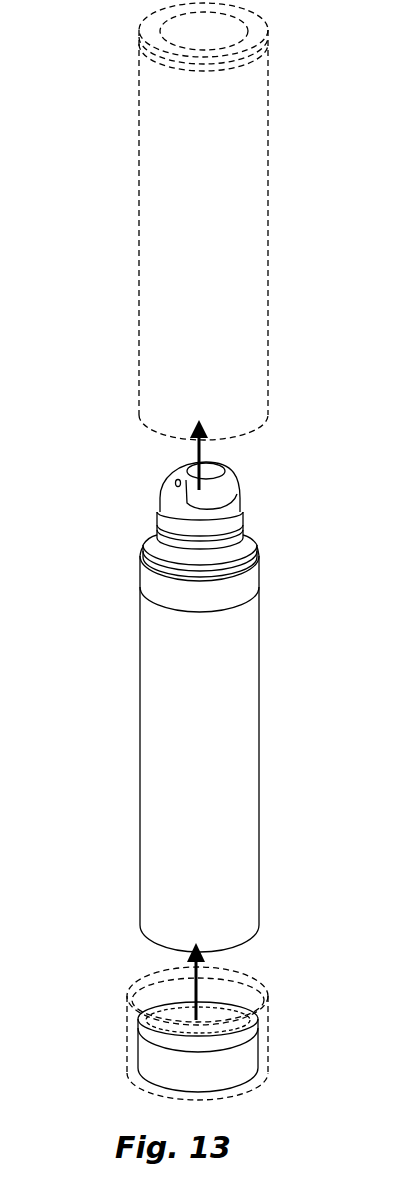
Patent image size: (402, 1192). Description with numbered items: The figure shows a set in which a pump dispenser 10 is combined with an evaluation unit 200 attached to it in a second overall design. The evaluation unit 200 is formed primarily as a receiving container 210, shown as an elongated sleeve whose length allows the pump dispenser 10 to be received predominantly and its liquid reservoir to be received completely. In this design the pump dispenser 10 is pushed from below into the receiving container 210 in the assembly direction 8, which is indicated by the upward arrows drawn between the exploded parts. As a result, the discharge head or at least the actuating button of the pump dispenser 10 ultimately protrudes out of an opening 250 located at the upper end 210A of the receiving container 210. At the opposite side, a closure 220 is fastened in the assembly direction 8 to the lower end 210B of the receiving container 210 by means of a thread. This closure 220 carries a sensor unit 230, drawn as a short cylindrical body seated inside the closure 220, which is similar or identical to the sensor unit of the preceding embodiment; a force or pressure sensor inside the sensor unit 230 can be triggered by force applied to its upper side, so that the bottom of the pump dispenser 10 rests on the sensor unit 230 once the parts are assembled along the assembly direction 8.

The assembly direction 8 is at (188, 463).
The pump dispenser 10 is at (271, 692).
The evaluation unit 200 is at (218, 221).
The receiving container 210 is at (247, 203).
The upper end of the receiving container 210A is at (136, 51).
The lower end of the receiving container 210B is at (133, 403).
The closure 220 is at (266, 1095).
The sensor unit 230 is at (249, 1058).
The opening 250 is at (222, 32).